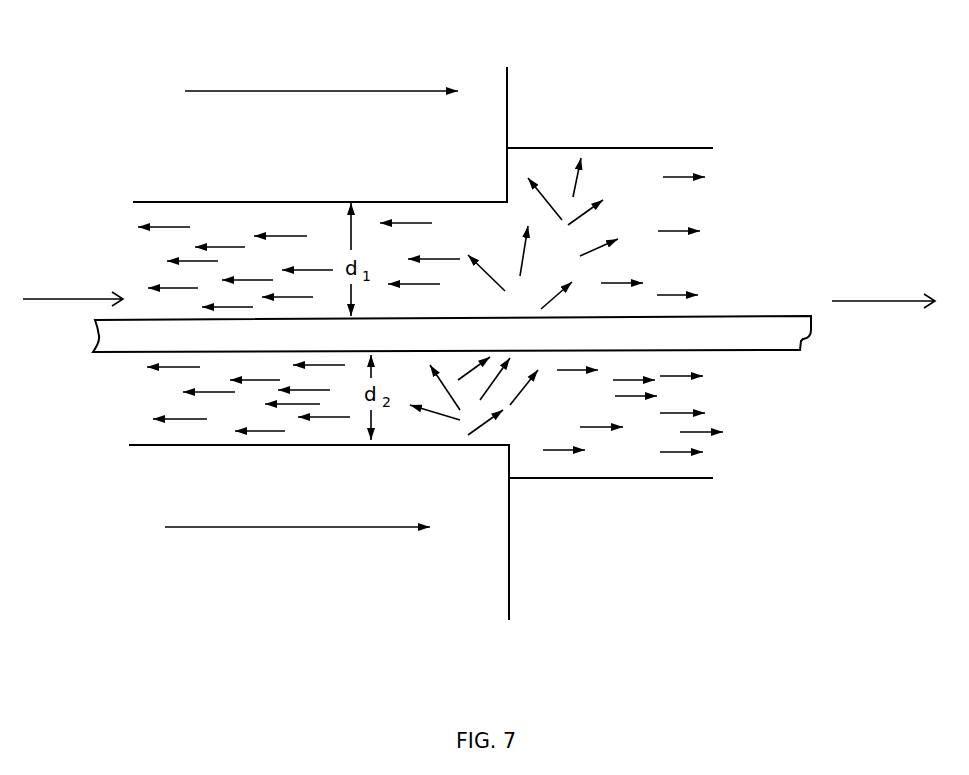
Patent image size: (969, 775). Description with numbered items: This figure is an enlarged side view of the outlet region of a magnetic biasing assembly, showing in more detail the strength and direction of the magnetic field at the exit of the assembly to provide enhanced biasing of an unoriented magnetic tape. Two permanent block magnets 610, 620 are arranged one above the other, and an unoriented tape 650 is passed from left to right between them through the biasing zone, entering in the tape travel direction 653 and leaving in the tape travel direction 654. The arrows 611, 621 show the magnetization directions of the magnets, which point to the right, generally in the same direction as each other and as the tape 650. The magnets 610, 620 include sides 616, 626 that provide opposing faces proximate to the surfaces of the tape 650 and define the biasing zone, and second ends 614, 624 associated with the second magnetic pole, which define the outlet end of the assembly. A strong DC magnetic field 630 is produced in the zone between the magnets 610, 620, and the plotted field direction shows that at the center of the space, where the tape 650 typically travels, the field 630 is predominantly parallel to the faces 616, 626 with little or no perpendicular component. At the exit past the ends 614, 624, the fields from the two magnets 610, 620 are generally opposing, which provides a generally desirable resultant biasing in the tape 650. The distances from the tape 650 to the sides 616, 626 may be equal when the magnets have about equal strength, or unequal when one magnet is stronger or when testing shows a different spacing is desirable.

The block magnet 610 is at (339, 161).
The magnetization direction arrow 611 is at (400, 91).
The second end 614 is at (508, 100).
The side 616 is at (500, 203).
The block magnet 620 is at (347, 508).
The magnetization direction arrow 621 is at (340, 527).
The second end 624 is at (510, 557).
The side 626 is at (503, 445).
The DC magnetic field 630 is at (668, 134).
The unoriented tape 650 is at (133, 355).
The tape travel direction 653 is at (97, 298).
The tape travel direction 654 is at (890, 300).